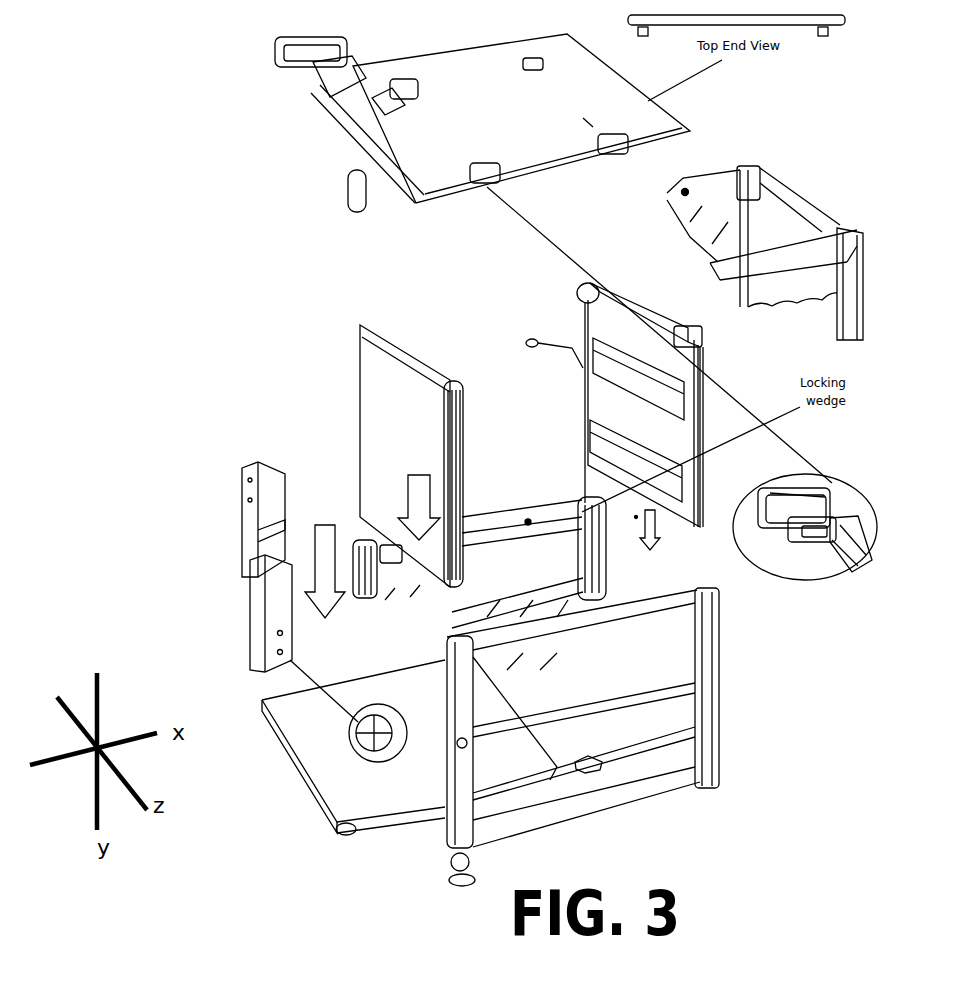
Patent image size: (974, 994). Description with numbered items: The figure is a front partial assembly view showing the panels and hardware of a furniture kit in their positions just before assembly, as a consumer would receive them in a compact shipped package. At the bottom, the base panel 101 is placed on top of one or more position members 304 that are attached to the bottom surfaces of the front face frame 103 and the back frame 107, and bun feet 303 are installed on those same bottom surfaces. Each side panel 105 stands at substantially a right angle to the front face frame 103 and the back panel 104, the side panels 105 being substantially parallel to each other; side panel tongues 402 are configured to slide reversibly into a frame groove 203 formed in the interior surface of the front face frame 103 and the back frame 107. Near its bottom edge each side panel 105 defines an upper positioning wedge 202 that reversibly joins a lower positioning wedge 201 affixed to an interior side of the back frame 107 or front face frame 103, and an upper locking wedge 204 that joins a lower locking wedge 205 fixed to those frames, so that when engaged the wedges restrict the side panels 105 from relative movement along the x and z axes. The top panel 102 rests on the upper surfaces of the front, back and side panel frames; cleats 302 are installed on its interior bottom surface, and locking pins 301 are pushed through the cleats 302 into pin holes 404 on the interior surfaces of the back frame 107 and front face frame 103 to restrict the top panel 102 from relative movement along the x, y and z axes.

The base panel 101 is at (308, 767).
The top panel 102 is at (521, 118).
The front face frame 103 is at (713, 767).
The back panel 104 is at (517, 669).
The side panels 105 is at (367, 360).
The back frame 107 is at (482, 515).
The lower positioning wedge 201 is at (247, 613).
The upper positioning wedge 202 is at (247, 493).
The frame groove 203 is at (703, 583).
The upper locking wedge 204 is at (583, 280).
The lower locking wedge 205 is at (571, 515).
The locking pin 301 is at (380, 113).
The cleat 302 is at (328, 75).
The bun foot 303 is at (453, 867).
The position member 304 is at (663, 780).
The side panel tongue 402 is at (452, 388).
The pin hole 404 is at (522, 518).